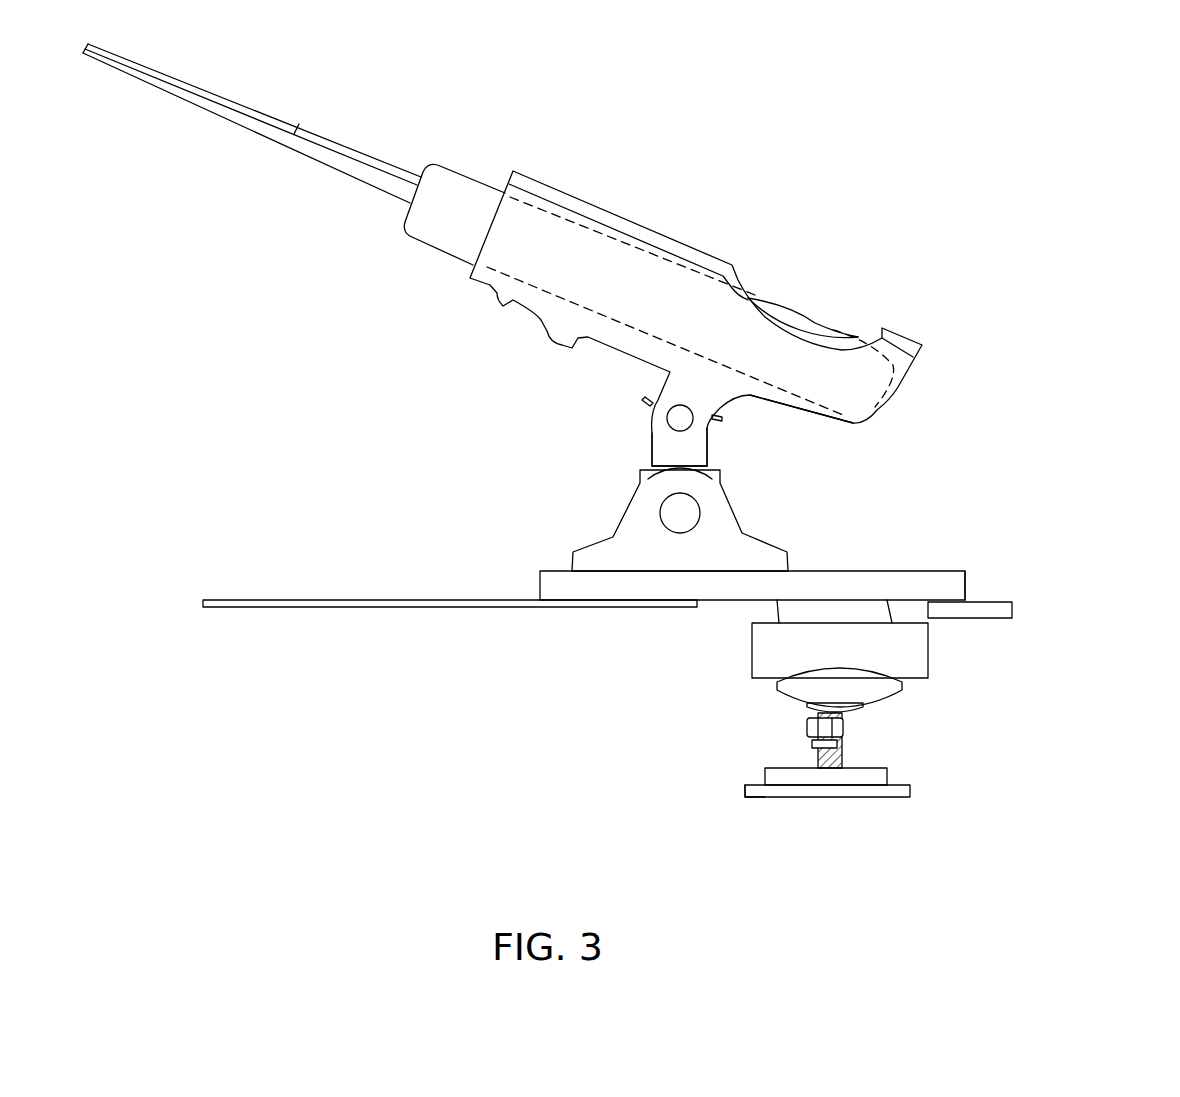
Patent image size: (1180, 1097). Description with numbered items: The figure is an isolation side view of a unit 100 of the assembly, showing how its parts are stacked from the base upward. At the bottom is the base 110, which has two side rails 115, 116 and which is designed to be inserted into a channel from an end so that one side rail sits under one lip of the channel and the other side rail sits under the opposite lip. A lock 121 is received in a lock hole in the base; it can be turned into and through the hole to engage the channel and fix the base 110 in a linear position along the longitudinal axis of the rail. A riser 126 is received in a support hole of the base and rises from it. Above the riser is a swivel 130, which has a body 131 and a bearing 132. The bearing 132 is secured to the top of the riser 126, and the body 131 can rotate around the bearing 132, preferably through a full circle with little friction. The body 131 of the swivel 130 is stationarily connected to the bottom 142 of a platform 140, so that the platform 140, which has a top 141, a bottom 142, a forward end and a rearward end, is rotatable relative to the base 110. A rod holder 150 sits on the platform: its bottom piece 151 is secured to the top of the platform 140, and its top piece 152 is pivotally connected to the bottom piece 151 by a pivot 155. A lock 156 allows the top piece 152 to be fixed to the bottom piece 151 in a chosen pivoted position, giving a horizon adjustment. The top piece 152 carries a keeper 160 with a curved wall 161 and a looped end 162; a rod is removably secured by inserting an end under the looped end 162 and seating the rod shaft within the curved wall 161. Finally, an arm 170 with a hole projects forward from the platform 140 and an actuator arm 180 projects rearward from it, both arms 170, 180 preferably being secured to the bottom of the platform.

The unit 100 is at (427, 340).
The base 110 is at (887, 770).
The side rail 115 is at (743, 790).
The side rail 116 is at (910, 795).
The lock 121 is at (820, 747).
The riser 126 is at (845, 743).
The swivel 130 is at (910, 642).
The body 131 is at (910, 662).
The bearing 132 is at (807, 707).
The platform 140 is at (897, 570).
The top 141 is at (947, 572).
The bottom 142 is at (715, 600).
The rod holder 150 is at (587, 547).
The bottom piece 151 is at (738, 522).
The top piece 152 is at (810, 393).
The pivot 155 is at (680, 418).
The lock 156 is at (644, 400).
The keeper 160 is at (700, 266).
The curved wall 161 is at (616, 243).
The looped end 162 is at (903, 328).
The arm 170 is at (512, 607).
The actuator arm 180 is at (1013, 607).